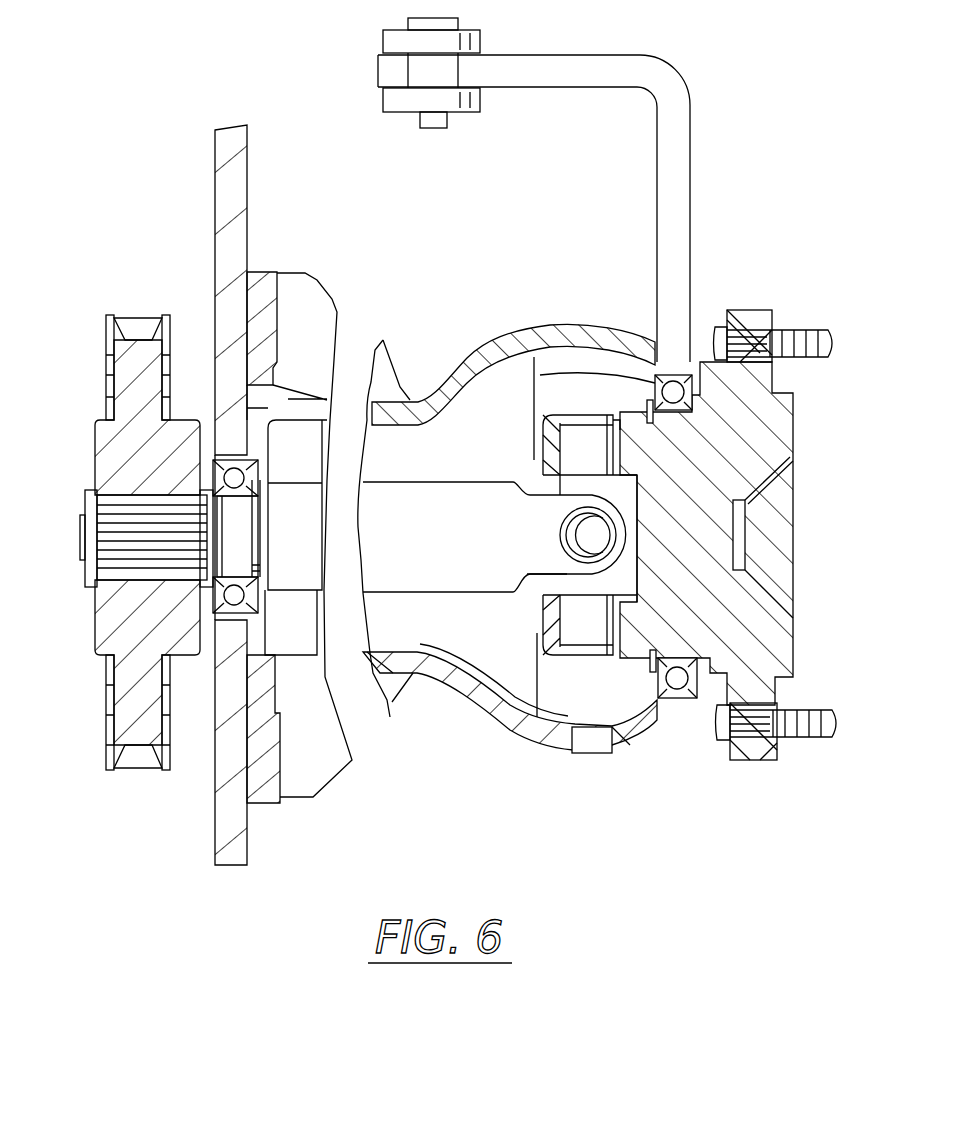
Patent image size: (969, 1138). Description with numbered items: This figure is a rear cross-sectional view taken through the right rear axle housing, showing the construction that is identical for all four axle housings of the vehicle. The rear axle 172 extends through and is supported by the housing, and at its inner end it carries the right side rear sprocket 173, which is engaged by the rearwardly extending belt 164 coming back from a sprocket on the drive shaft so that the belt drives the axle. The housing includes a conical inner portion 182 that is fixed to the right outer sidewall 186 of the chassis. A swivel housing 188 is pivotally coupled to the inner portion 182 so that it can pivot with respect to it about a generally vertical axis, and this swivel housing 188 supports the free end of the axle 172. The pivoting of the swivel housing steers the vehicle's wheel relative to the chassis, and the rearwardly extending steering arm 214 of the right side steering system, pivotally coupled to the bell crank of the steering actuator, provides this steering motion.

The rearwardly extending steering arm 214 is at (480, 36).
The right outer sidewall 186 is at (247, 165).
The right side rear sprocket 173 is at (130, 330).
The belt 164 is at (112, 312).
The rear axle 172 is at (461, 490).
The conical inner portion 182 is at (522, 737).
The swivel housing 188 is at (655, 712).